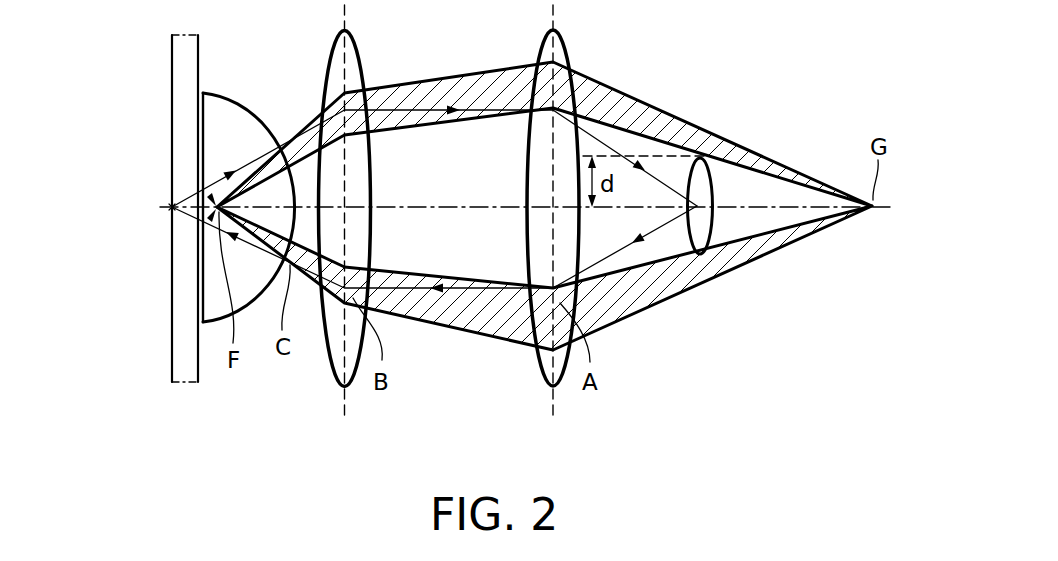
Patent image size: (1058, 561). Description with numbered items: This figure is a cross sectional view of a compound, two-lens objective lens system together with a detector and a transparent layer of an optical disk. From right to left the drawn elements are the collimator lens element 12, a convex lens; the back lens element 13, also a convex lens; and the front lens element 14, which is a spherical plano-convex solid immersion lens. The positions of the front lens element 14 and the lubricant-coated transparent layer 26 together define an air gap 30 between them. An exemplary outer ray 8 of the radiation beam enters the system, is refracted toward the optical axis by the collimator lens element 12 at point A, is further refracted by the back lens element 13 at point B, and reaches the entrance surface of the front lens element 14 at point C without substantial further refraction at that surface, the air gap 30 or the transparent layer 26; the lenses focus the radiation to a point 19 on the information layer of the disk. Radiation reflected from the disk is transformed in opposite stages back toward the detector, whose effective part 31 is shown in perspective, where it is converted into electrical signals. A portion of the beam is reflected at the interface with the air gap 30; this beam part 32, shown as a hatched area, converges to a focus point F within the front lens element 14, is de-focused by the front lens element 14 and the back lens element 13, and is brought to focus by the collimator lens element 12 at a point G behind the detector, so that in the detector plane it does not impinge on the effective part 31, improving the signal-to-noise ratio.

The outer ray 8 is at (658, 230).
The collimator lens element 12 is at (560, 52).
The back lens element 13 is at (348, 51).
The front lens element 14 is at (256, 123).
The point 19 is at (172, 207).
The transparent layer 26 is at (182, 156).
The air gap 30 is at (201, 97).
The effective part of the detector 31 is at (707, 166).
The beam part 32 is at (212, 230).